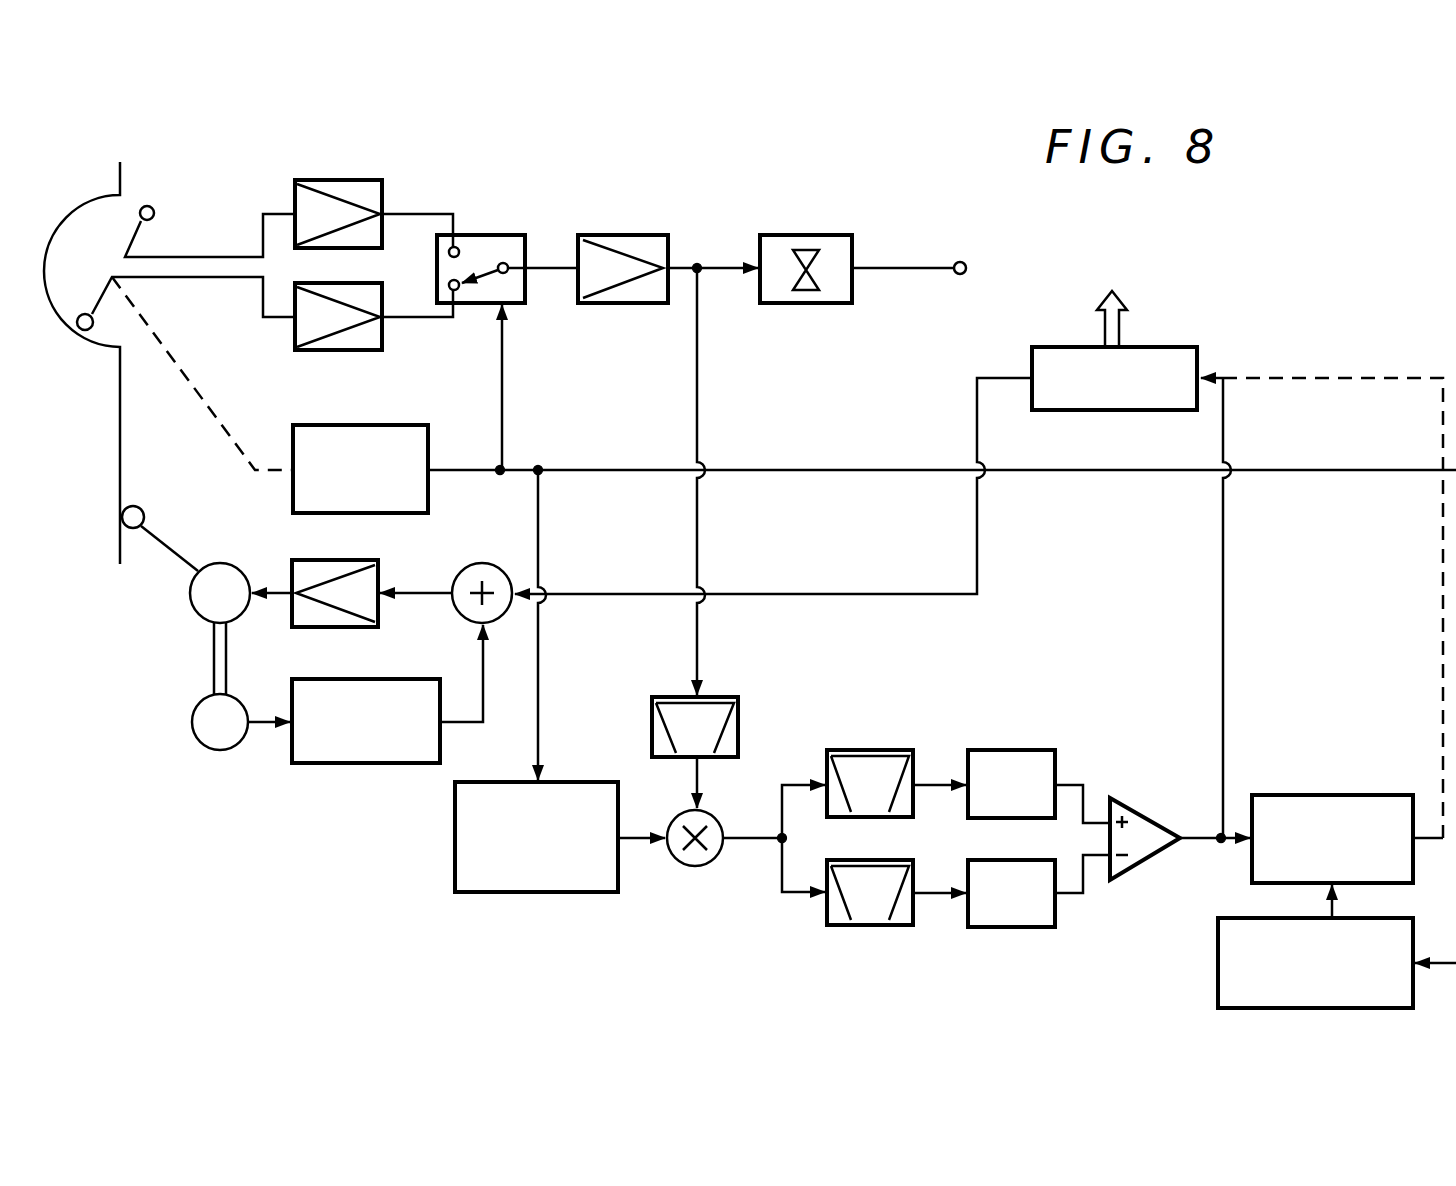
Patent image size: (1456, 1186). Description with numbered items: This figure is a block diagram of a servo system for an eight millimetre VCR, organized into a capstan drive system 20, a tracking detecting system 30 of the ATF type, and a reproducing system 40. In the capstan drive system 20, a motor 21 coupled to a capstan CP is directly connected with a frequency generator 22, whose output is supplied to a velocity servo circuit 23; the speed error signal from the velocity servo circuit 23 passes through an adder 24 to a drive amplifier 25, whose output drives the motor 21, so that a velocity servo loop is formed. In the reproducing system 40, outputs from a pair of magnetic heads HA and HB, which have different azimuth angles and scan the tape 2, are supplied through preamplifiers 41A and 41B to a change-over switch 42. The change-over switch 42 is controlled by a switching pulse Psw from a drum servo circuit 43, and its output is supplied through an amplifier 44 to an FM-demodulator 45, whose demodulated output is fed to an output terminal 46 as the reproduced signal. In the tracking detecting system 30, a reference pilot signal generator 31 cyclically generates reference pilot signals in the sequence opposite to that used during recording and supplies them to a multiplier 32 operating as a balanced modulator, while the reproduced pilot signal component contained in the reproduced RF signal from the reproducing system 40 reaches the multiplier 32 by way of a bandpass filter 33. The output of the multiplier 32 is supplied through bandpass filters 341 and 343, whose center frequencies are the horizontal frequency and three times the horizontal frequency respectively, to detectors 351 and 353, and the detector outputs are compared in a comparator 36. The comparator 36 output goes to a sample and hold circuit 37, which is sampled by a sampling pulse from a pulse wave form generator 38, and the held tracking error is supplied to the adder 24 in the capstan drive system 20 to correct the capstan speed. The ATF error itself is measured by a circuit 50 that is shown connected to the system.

The tape 2 is at (120, 450).
The magnetic head HA is at (155, 212).
The magnetic head HB is at (80, 314).
The capstan CP is at (144, 517).
The switching pulse Psw is at (502, 380).
The capstan drive system 20 is at (296, 858).
The motor 21 is at (190, 602).
The frequency generator 22 is at (220, 750).
The velocity servo circuit 23 is at (372, 765).
The adder 24 is at (482, 563).
The drive amplifier 25 is at (372, 560).
The tracking detecting system 30 is at (793, 986).
The reference pilot signal generator 31 is at (538, 895).
The multiplier 32 is at (696, 866).
The bandpass filter 33 is at (722, 697).
The bandpass filter 341 is at (868, 750).
The bandpass filter 343 is at (878, 925).
The detector 351 is at (1013, 750).
The detector 353 is at (1018, 927).
The comparator 36 is at (1142, 800).
The sample and hold circuit 37 is at (1350, 795).
The pulse wave form generator 38 is at (1218, 967).
The reproducing system 40 is at (585, 156).
The preamplifier 41A is at (343, 180).
The preamplifier 41B is at (382, 340).
The change-over switch 42 is at (497, 235).
The drum servo circuit 43 is at (343, 425).
The amplifier 44 is at (645, 235).
The FM-demodulator 45 is at (808, 235).
The output terminal 46 is at (960, 262).
The circuit 50 is at (1172, 347).